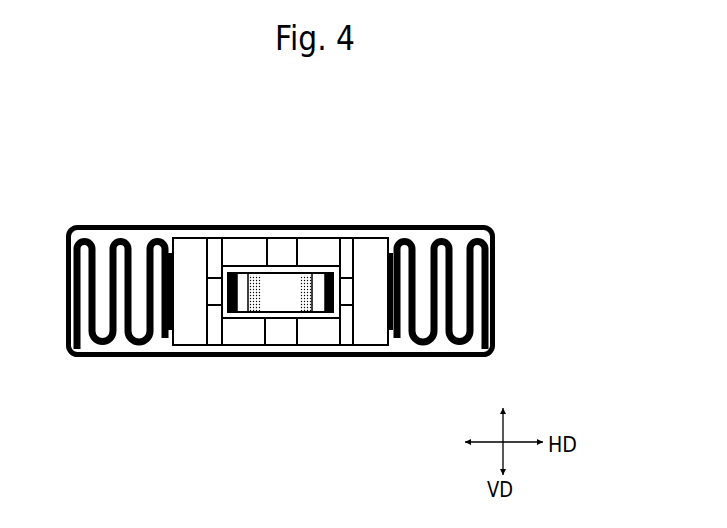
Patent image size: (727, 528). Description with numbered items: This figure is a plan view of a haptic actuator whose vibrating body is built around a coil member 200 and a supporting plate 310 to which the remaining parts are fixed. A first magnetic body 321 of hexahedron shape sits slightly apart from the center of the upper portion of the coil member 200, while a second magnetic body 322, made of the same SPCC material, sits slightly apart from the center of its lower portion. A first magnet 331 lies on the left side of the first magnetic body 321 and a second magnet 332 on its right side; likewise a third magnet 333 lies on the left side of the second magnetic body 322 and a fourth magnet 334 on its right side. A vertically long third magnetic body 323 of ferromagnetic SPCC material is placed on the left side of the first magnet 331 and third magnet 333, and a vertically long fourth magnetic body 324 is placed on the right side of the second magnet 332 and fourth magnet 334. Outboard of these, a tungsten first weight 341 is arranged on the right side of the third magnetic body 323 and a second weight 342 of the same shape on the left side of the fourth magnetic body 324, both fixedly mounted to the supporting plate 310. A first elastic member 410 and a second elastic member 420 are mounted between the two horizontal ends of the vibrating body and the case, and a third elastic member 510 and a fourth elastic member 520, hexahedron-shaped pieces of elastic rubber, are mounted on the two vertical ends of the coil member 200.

The coil member 200 is at (288, 366).
The supporting plate 310 is at (167, 337).
The first magnetic body 321 is at (283, 247).
The second magnetic body 322 is at (278, 327).
The third magnetic body 323 is at (218, 247).
The fourth magnetic body 324 is at (348, 250).
The first magnet 331 is at (247, 252).
The second magnet 332 is at (326, 250).
The third magnet 333 is at (237, 330).
The fourth magnet 334 is at (328, 330).
The first weight 341 is at (185, 252).
The second weight 342 is at (373, 250).
The first elastic member 410 is at (97, 238).
The second elastic member 420 is at (480, 236).
The third elastic member 510 is at (227, 296).
The fourth elastic member 520 is at (333, 298).